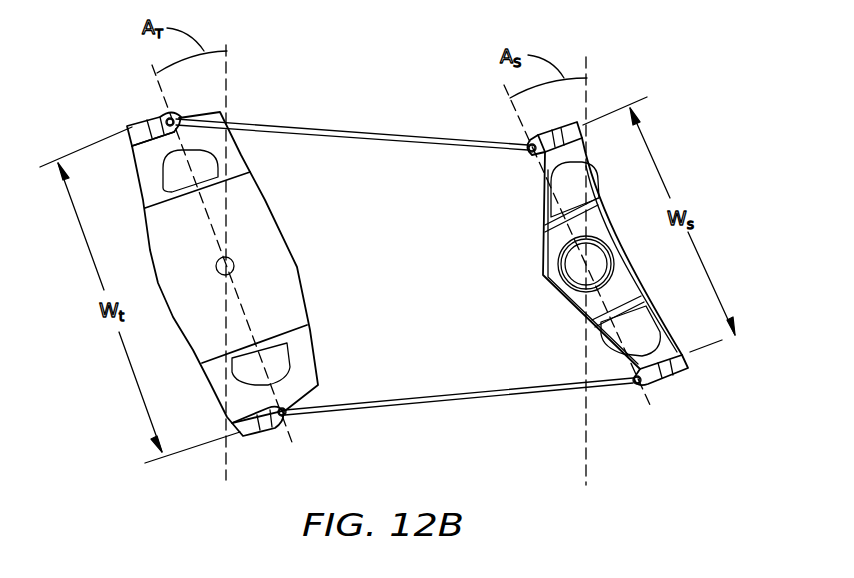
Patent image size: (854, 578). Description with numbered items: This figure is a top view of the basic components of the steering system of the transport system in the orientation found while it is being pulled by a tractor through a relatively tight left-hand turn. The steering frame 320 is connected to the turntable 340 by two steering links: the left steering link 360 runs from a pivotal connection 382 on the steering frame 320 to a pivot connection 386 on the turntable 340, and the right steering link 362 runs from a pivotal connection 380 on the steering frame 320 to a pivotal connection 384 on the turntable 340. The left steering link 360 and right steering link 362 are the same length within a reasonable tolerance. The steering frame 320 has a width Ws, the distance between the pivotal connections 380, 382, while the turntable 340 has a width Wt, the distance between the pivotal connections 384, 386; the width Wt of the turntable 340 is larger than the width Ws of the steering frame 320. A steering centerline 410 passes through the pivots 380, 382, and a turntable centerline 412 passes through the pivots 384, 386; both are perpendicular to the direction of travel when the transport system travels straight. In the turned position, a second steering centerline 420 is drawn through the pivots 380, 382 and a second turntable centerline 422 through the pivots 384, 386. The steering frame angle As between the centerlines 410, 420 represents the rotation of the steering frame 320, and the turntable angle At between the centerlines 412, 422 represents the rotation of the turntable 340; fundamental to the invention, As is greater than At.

The steering frame 320 is at (547, 272).
The turntable 340 is at (303, 288).
The left steering link 360 is at (388, 148).
The right steering link 362 is at (407, 398).
The pivotal connection 380 is at (636, 387).
The pivotal connection 382 is at (530, 153).
The pivotal connection 384 is at (285, 417).
The pivot connection 386 is at (168, 118).
The steering centerline 410 is at (590, 102).
The turntable centerline 412 is at (222, 453).
The second steering centerline 420 is at (503, 84).
The second turntable centerline 422 is at (159, 86).